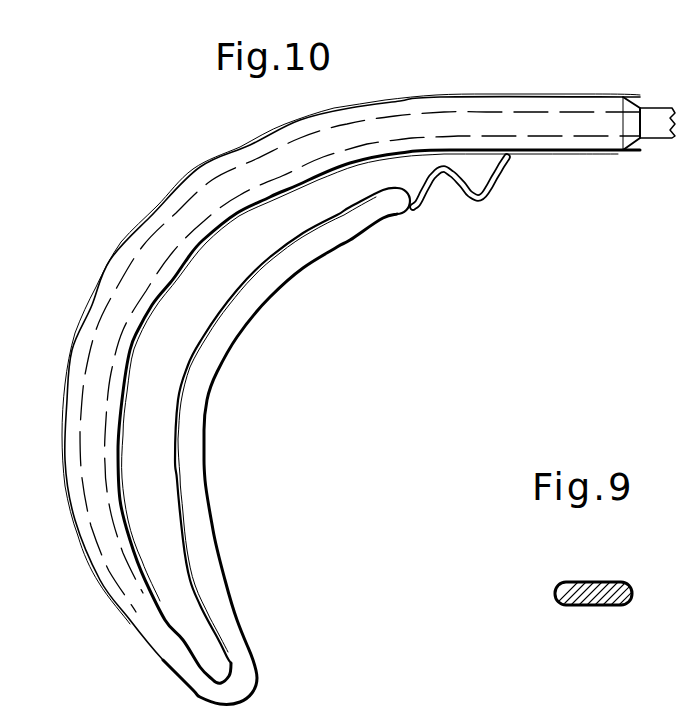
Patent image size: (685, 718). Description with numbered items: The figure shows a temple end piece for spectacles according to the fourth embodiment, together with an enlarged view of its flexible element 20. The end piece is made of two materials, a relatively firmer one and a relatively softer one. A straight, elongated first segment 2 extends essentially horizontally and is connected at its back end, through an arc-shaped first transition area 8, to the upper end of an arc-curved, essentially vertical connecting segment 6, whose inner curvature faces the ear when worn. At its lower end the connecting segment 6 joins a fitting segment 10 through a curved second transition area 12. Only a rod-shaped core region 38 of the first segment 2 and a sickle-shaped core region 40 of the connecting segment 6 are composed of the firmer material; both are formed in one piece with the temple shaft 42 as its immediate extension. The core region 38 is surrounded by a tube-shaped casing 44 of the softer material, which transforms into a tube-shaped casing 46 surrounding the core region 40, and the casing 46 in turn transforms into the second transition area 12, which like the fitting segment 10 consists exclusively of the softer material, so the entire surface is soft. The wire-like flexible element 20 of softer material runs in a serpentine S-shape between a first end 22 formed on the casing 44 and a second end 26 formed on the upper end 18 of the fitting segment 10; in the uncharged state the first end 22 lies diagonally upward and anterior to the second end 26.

In FIG. 10, the first segment 2 is at (532, 97).
In FIG. 10, the connecting segment 6 is at (343, 399).
In FIG. 10, the first transition area 8 is at (220, 166).
In FIG. 10, the fitting segment 10 is at (212, 432).
In FIG. 10, the second transition area 12 is at (243, 671).
In FIG. 10, the upper end 18 is at (349, 238).
In FIG. 10, the flexible element 20 is at (481, 212).
In FIG. 9, the flexible element 20 is at (616, 593).
In FIG. 10, the first end 22 is at (511, 160).
In FIG. 10, the second end 26 is at (414, 214).
In FIG. 10, the core region 38 is at (412, 131).
In FIG. 10, the core region 40 is at (107, 332).
In FIG. 10, the temple shaft 42 is at (653, 120).
In FIG. 10, the casing 44 is at (497, 105).
In FIG. 10, the casing 46 is at (87, 589).